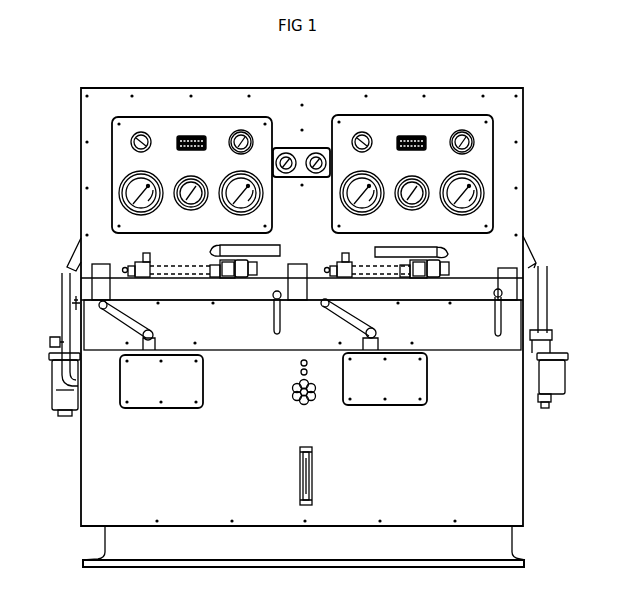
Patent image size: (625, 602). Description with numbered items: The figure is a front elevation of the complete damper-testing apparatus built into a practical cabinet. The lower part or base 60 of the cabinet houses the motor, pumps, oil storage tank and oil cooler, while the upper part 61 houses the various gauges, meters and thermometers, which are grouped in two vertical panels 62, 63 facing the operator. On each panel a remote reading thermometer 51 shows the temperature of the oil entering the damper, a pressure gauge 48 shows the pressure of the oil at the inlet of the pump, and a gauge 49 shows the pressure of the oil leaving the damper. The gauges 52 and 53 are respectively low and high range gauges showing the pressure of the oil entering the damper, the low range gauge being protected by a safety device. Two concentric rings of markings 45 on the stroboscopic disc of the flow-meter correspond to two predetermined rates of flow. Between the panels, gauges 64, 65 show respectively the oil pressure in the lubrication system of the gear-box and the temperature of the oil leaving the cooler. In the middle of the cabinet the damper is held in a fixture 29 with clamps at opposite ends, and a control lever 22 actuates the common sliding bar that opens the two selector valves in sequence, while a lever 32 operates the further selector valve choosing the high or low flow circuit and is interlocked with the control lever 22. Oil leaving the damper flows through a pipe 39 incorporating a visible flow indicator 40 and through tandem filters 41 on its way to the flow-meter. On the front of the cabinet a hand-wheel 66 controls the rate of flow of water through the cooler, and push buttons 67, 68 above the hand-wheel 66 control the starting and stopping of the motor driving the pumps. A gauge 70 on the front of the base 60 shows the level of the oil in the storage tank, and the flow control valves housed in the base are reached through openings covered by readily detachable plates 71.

The control lever 22 is at (140, 323).
The fixture 29 is at (160, 253).
The lever 32 is at (274, 323).
The pipe 39 is at (212, 253).
The visible flow indicator 40 is at (380, 253).
The tandem filters 41 is at (57, 392).
The rings of markings 45 is at (190, 136).
The pressure gauge 48 is at (241, 130).
The gauge 49 is at (191, 180).
The remote reading thermometer 51 is at (140, 132).
The low range gauge 52 is at (248, 200).
The high range gauge 53 is at (133, 205).
The base 60 is at (100, 507).
The upper part 61 is at (310, 98).
The vertical panel 62 is at (480, 161).
The vertical panel 63 is at (118, 158).
The gauge 64 is at (288, 155).
The gauge 65 is at (318, 155).
The hand-wheel 66 is at (304, 405).
The push button 67 is at (300, 373).
The push button 68 is at (300, 363).
The gauge 70 is at (312, 488).
The detachable plates 71 is at (158, 386).